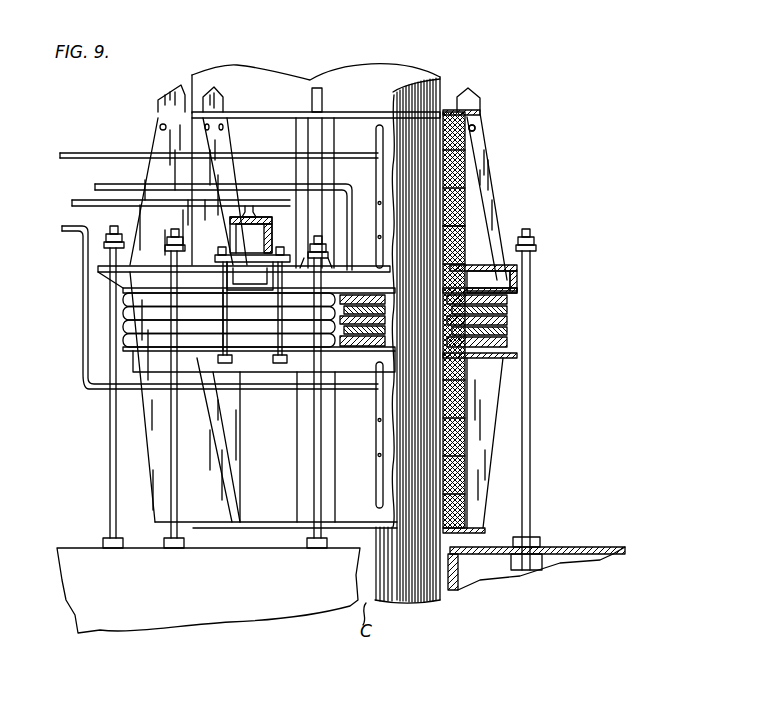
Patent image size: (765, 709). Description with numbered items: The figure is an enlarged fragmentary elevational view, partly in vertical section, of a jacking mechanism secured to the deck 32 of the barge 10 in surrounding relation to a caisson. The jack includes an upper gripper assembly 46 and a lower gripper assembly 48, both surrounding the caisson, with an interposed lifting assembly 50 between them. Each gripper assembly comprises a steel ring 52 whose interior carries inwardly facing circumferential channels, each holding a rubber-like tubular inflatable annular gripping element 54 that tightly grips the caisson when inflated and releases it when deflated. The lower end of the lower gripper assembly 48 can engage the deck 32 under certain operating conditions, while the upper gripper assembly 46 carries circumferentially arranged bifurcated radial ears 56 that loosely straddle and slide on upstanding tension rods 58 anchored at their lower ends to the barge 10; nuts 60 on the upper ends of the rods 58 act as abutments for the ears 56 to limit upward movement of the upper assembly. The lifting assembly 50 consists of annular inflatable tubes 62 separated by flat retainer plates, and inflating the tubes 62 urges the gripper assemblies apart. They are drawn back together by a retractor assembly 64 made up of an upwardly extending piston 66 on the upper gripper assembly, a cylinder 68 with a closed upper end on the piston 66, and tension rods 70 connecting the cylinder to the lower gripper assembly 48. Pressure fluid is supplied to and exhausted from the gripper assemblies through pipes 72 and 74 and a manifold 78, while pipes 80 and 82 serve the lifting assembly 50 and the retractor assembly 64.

The barge 10 is at (150, 622).
The deck 32 is at (585, 547).
The upper gripper assembly 46 is at (504, 191).
The lower gripper assembly 48 is at (505, 459).
The lifting assembly 50 is at (125, 316).
The steel ring 52 is at (462, 226).
The inflatable annular gripping element 54 is at (465, 160).
The bifurcated radial ears 56 is at (100, 271).
The tension rods 58 is at (112, 452).
The nuts 60 is at (108, 243).
The inflatable tubes 62 is at (505, 342).
The retractor assembly 64 is at (273, 227).
The piston 66 is at (255, 268).
The cylinder 68 is at (233, 220).
The tension rods 70 is at (270, 329).
The pipe 72 is at (104, 159).
The pipe 74 is at (88, 360).
The manifold 78 is at (377, 457).
The pipe 80 is at (95, 191).
The pipe 82 is at (78, 203).